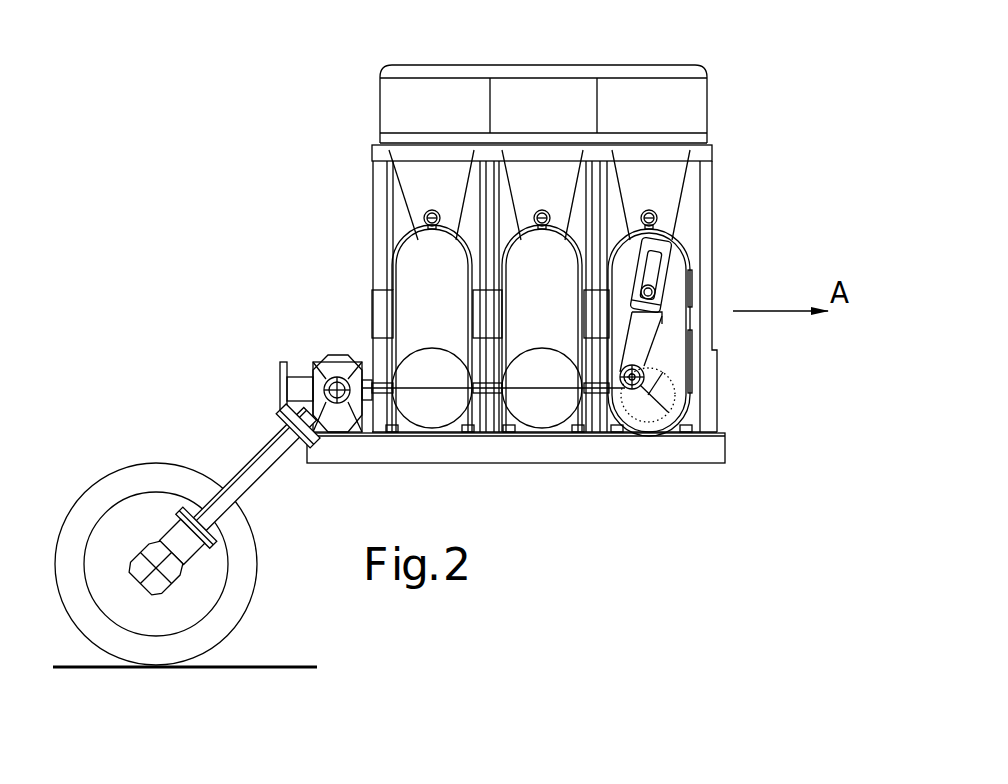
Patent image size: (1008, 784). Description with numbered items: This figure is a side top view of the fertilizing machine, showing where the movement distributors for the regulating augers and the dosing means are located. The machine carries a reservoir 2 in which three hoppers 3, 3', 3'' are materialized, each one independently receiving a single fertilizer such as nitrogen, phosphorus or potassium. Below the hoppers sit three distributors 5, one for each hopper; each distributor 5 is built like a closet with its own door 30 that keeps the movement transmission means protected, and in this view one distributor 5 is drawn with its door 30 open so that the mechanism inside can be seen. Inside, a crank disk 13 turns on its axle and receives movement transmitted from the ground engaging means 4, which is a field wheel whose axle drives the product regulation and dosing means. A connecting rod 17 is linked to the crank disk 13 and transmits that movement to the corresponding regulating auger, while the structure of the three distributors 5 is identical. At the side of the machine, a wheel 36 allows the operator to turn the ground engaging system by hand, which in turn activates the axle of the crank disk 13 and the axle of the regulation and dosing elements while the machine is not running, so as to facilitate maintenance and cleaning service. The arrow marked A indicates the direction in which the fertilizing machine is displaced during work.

The reservoir 2 is at (706, 80).
The hopper 3 is at (588, 254).
The hopper 3' is at (437, 143).
The hopper 3'' is at (382, 188).
The distributor 5 is at (503, 257).
The connecting rod 17 is at (668, 292).
The door 30 is at (703, 344).
The crank disk 13 is at (677, 390).
The wheel 36 is at (283, 388).
The ground engaging means 4 is at (187, 449).